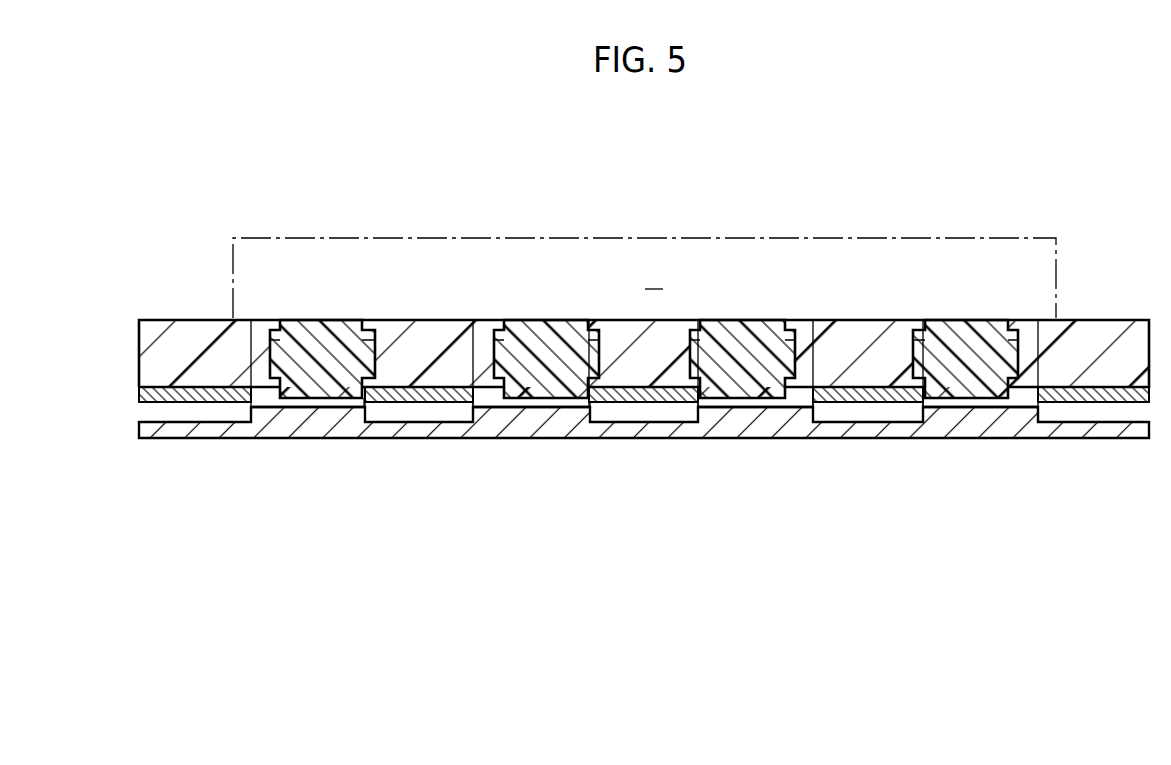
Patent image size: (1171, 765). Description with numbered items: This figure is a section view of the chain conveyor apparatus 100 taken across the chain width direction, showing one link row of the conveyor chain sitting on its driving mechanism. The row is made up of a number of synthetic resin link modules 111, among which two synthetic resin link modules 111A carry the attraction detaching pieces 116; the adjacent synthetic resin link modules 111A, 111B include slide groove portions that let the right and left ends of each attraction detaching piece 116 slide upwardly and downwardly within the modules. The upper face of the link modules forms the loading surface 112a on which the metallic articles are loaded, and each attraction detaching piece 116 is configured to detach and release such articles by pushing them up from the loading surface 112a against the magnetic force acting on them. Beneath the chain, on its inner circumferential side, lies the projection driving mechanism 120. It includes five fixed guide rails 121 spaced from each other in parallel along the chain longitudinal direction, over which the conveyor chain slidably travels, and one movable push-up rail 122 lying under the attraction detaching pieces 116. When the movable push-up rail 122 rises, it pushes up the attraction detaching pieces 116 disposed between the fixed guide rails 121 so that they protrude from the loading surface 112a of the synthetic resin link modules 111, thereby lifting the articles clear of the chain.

The chain conveyor apparatus 100 is at (1082, 154).
The synthetic resin link module 111 is at (232, 373).
The synthetic resin link module 111A is at (260, 373).
The synthetic resin link module 111B is at (413, 373).
The loading surface 112a is at (1085, 316).
The attraction detaching piece 116 is at (323, 373).
The projection driving mechanism 120 is at (641, 457).
The fixed guide rail 121 is at (197, 398).
The movable push-up rail 122 is at (152, 431).